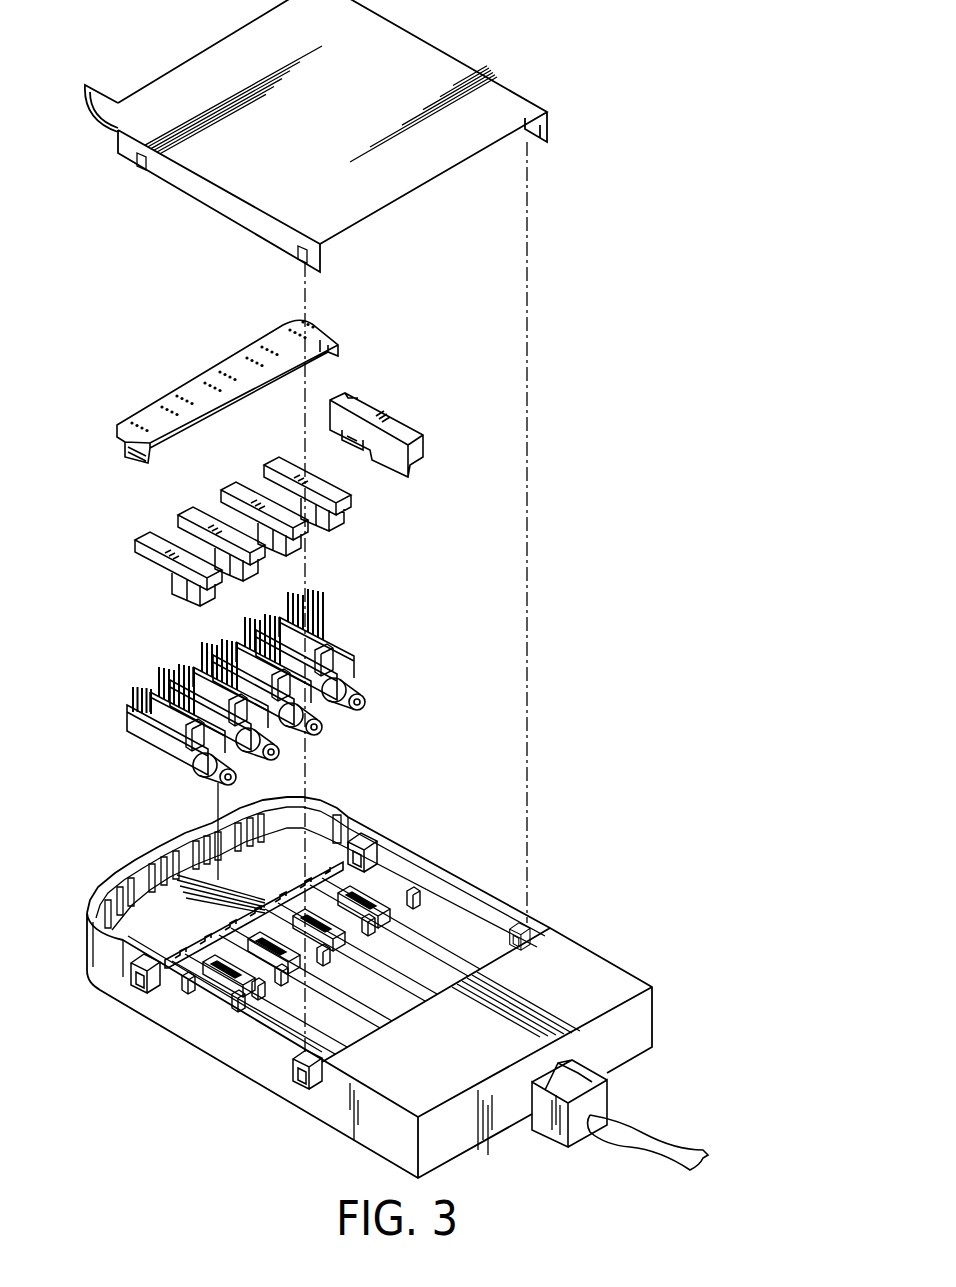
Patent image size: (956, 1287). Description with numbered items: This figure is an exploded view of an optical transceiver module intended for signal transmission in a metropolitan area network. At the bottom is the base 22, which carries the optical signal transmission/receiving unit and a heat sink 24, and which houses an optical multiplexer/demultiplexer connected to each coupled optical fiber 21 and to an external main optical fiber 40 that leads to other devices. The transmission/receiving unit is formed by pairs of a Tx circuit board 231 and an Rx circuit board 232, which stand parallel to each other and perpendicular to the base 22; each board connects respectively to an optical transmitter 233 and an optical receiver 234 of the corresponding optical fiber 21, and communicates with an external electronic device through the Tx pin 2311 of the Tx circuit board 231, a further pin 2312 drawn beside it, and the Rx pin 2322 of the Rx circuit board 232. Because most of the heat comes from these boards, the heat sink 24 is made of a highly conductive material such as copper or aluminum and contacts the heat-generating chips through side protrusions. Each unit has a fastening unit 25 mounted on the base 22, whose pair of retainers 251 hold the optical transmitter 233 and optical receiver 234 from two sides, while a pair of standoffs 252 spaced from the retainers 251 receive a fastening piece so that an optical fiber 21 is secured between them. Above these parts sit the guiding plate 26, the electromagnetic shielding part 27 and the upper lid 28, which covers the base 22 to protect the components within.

The optical fiber 21 is at (425, 925).
The base 22 is at (465, 922).
The heat sink 24 is at (160, 532).
The fastening unit 25 is at (180, 987).
The guiding plate 26 is at (152, 410).
The electromagnetic shielding part 27 is at (380, 418).
The upper lid 28 is at (213, 62).
The external main optical fiber 40 is at (657, 1143).
The Tx circuit board 231 is at (152, 690).
The Rx circuit board 232 is at (160, 735).
The optical transmitter 233 is at (245, 745).
The optical receiver 234 is at (200, 772).
The retainer 251 is at (212, 980).
The standoff 252 is at (265, 1000).
The Tx pin 2311 is at (160, 668).
The second pins 2312 is at (183, 665).
The Rx pin 2322 is at (128, 695).